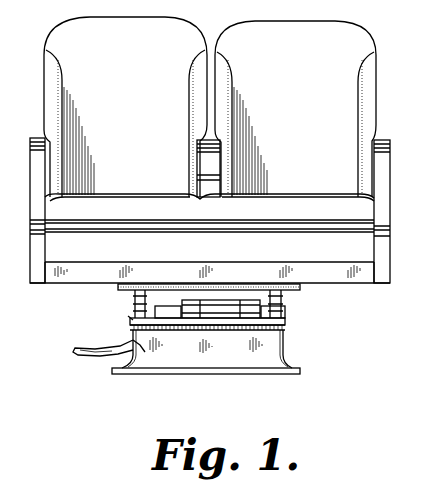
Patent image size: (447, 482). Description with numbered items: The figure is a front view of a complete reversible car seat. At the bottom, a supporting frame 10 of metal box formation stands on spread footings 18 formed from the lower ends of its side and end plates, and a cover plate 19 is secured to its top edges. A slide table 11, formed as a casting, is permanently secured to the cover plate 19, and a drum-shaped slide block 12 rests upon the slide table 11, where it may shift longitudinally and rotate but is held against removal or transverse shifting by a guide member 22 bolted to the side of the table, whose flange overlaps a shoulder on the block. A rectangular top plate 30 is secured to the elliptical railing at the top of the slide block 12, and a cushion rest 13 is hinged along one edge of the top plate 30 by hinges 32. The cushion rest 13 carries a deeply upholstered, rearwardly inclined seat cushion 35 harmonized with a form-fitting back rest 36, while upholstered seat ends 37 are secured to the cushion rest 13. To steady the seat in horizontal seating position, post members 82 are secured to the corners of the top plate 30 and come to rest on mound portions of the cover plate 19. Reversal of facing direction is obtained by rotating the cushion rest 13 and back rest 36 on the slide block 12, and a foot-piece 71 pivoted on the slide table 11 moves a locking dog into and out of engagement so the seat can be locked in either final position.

The back rest 36 is at (210, 107).
The seat ends 37 is at (387, 160).
The seat cushion 35 is at (209, 228).
The cushion rest 13 is at (77, 283).
The hinges 32 is at (446, 325).
The top plate 30 is at (298, 290).
The post members 82 is at (286, 309).
The guide member 22 is at (198, 306).
The slide table 11 is at (243, 318).
The supporting frame 10 is at (286, 340).
The spread footings 18 is at (300, 372).
The slide block 12 is at (175, 308).
The cover plate 19 is at (131, 321).
The foot-piece 71 is at (75, 348).